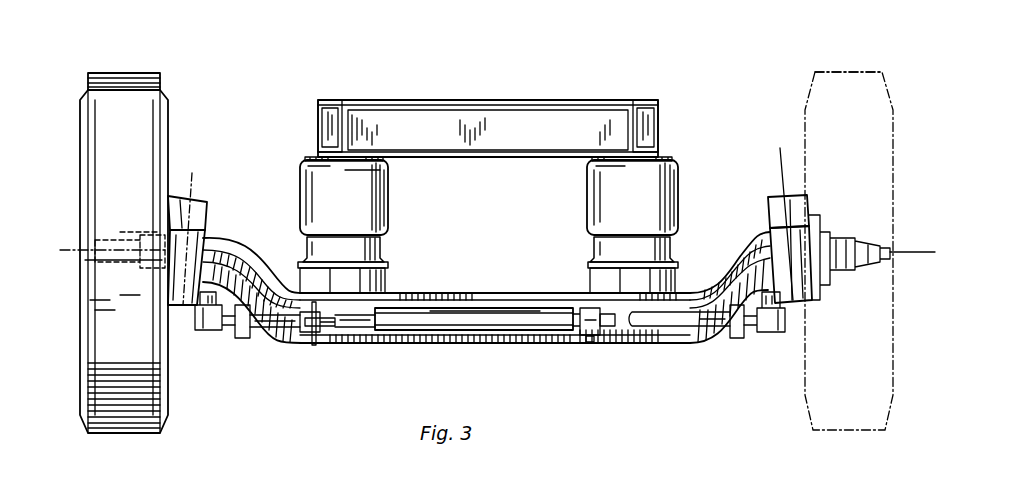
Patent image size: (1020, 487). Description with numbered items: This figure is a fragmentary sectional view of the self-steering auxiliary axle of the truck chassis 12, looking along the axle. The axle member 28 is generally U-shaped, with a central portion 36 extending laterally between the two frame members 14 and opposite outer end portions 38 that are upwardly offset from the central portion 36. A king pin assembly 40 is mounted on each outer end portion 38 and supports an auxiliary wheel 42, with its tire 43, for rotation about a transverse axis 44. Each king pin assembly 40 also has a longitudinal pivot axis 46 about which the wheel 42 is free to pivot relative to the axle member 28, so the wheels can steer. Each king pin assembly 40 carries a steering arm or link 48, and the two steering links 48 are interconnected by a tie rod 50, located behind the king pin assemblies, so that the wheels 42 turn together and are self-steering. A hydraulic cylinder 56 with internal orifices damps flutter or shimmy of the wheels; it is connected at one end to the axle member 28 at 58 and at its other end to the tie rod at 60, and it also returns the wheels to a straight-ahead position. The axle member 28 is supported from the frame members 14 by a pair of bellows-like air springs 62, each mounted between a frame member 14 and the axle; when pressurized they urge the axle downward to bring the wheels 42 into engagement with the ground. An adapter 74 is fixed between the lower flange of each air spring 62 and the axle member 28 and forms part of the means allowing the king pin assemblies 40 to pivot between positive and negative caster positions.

The chassis 12 is at (524, 90).
The frame members 14 is at (374, 100).
The axle member 28 is at (586, 364).
The central portion 36 is at (478, 294).
The outer end portions 38 is at (235, 244).
The king pin assembly 40 is at (208, 207).
The auxiliary wheel 42 is at (168, 128).
The tires 43 is at (124, 72).
The transverse axis 44 is at (66, 250).
The longitudinal pivot axis 46 is at (192, 178).
The steering arm 48 is at (205, 325).
The tie rod 50 is at (272, 332).
The hydraulic cylinder 56 is at (490, 318).
The cylinder connection to axle member 58 is at (606, 320).
The cylinder connection to tie rod 60 is at (306, 336).
The air springs 62 is at (390, 187).
The adapter 74 is at (386, 275).